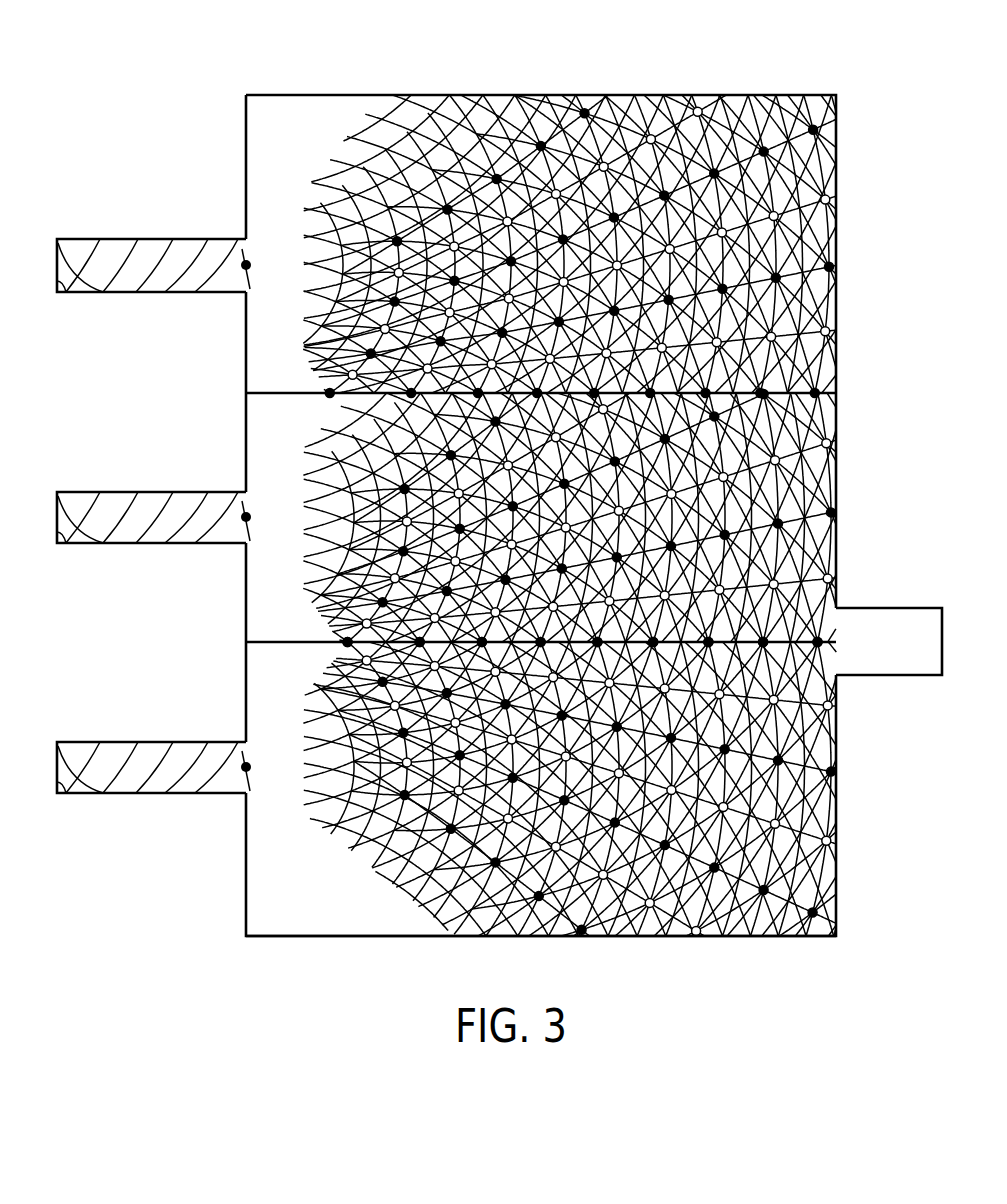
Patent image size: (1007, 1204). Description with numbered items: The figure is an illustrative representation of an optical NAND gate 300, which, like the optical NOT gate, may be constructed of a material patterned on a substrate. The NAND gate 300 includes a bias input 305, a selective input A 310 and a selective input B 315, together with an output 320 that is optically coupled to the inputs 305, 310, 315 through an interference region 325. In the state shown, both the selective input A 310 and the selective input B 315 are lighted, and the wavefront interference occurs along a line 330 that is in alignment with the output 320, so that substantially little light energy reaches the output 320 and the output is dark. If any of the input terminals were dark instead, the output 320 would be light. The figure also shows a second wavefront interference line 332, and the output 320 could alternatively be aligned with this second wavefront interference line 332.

The NAND gate 300 is at (802, 60).
The bias input 305 is at (88, 248).
The selective input A 310 is at (88, 500).
The selective input B 315 is at (88, 750).
The output 320 is at (878, 617).
The interference region 325 is at (711, 938).
The wavefront interference line 330 is at (787, 650).
The second wavefront interference line 332 is at (777, 390).